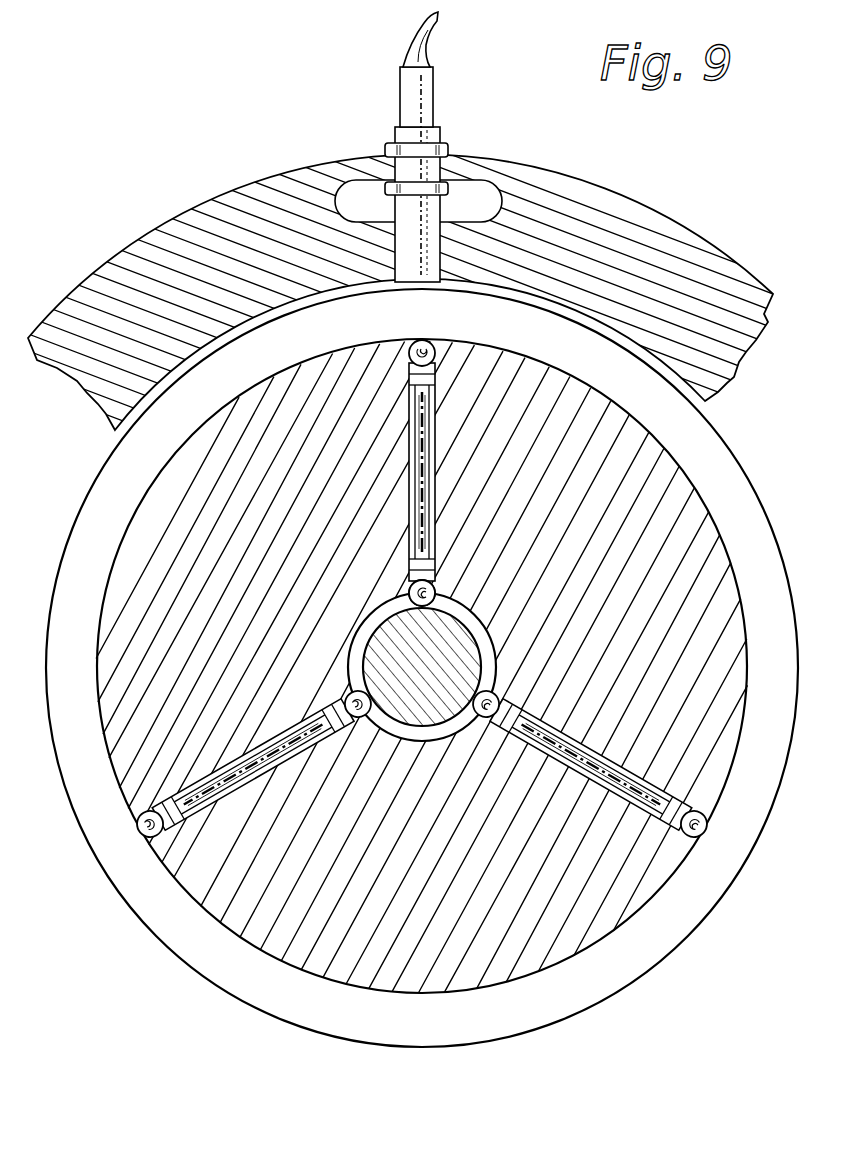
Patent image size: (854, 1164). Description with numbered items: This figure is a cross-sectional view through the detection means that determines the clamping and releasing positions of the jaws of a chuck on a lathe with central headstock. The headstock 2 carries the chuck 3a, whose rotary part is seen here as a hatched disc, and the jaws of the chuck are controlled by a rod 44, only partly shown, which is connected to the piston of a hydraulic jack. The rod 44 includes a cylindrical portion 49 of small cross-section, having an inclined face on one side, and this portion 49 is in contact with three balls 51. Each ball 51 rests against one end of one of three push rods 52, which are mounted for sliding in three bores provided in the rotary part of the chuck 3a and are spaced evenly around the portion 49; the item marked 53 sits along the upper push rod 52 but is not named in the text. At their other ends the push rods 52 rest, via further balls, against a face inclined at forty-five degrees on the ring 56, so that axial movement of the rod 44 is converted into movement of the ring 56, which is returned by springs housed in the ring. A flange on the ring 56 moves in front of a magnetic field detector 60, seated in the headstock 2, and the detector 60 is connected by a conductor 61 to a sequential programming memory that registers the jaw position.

The headstock 2 is at (614, 230).
The chuck 3a is at (662, 497).
The rod 44 is at (457, 657).
The cylindrical portion 49 is at (447, 642).
The balls 51 is at (418, 593).
The push rods 52 is at (420, 460).
The arm rod 53 is at (408, 396).
The ring 56 is at (178, 917).
The magnetic field detector 60 is at (430, 212).
The conductor 61 is at (439, 24).